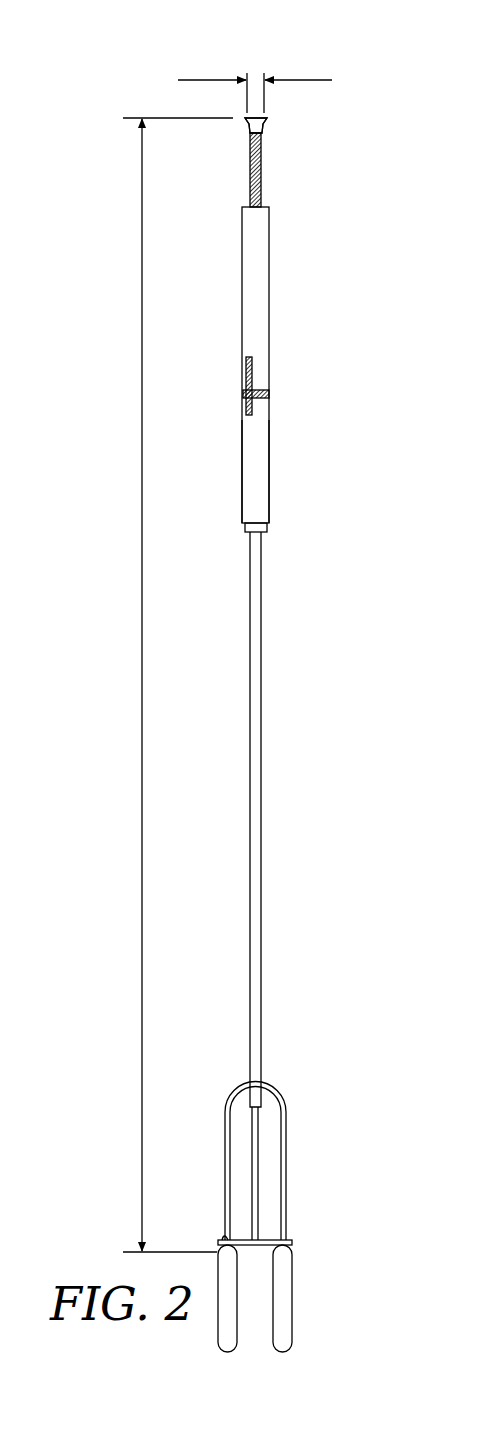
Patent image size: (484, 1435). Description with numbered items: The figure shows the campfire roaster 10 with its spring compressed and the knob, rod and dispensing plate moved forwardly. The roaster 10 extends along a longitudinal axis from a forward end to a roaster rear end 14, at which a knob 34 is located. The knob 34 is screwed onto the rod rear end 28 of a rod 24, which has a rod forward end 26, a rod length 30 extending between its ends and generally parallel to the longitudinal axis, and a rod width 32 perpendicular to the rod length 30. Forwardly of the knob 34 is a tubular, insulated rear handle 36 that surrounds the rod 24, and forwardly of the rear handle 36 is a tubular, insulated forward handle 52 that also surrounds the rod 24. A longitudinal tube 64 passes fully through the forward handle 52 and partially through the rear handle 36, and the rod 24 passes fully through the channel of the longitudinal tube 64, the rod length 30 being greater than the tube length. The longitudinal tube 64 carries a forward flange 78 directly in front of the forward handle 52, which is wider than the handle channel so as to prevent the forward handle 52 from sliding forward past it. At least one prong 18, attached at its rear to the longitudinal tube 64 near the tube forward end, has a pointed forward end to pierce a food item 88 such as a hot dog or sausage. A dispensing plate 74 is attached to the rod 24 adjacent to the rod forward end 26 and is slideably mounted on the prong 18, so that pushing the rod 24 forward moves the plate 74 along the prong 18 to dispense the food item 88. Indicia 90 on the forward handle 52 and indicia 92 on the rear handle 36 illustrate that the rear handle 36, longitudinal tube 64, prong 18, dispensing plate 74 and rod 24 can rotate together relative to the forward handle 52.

The campfire roaster 10 is at (79, 97).
The roaster rear end 14 is at (264, 127).
The knob 34 is at (256, 125).
The prong 18 is at (286, 1150).
The rod 24 is at (259, 1132).
The rod forward end 26 is at (259, 1240).
The rod rear end 28 is at (262, 134).
The rod length 30 is at (142, 535).
The rod width 32 is at (312, 80).
The rear handle 36 is at (242, 310).
The forward handle 52 is at (242, 472).
The longitudinal tube 64 is at (262, 755).
The dispensing plate 74 is at (245, 1240).
The forward flange 78 is at (268, 530).
The food item 88 is at (292, 1320).
The indicia 90 is at (242, 375).
The indicia 92 is at (242, 403).